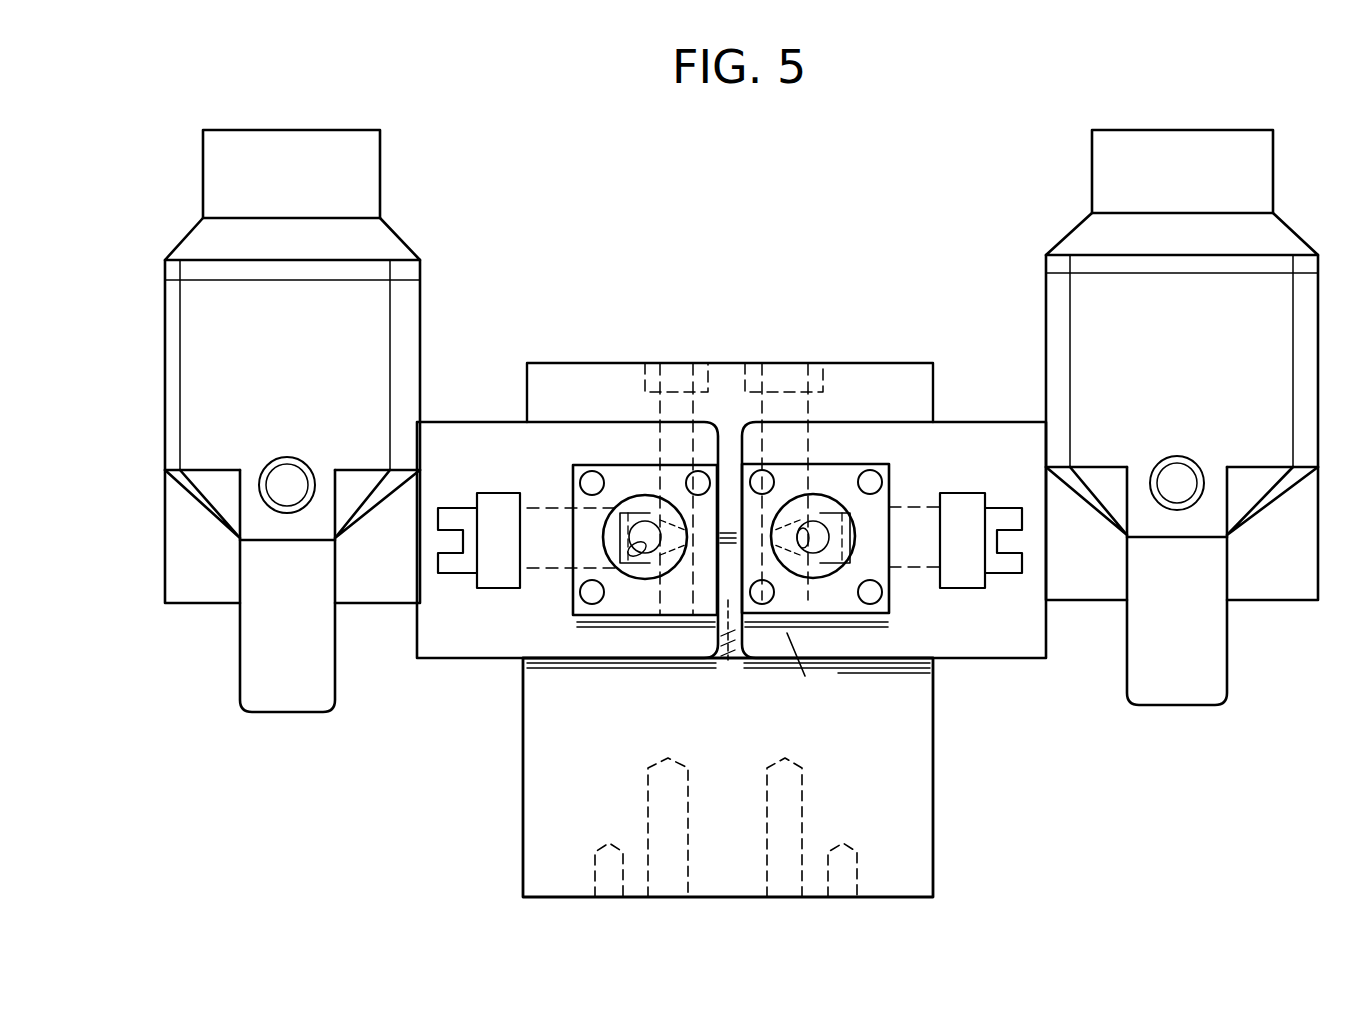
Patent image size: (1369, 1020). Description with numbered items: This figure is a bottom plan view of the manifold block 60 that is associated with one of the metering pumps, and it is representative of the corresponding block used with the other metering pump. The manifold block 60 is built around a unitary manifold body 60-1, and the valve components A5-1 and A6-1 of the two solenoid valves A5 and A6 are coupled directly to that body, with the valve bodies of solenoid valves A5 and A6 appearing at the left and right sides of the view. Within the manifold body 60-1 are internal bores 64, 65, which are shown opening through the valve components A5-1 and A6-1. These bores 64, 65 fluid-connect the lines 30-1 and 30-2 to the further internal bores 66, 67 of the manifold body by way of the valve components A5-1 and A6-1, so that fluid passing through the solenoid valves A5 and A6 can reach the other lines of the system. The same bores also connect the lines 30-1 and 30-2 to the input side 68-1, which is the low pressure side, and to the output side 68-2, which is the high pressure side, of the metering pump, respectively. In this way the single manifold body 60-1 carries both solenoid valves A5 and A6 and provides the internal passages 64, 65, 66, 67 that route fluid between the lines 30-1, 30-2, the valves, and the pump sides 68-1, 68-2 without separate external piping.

The manifold block 60 is at (930, 252).
The unitary manifold body 60-1 is at (611, 785).
The internal bore 66 is at (666, 408).
The internal bore 67 is at (760, 408).
The solenoid valve A5 is at (306, 386).
The solenoid valve A6 is at (1193, 381).
The valve component A5-1 is at (633, 470).
The valve component A6-1 is at (840, 470).
The internal bore 64 is at (648, 552).
The internal bore 65 is at (813, 551).
The line 30-1 is at (637, 548).
The line 30-2 is at (822, 542).
The input side of the metering pump 68-1 is at (722, 660).
The output side of the metering pump 68-2 is at (808, 686).